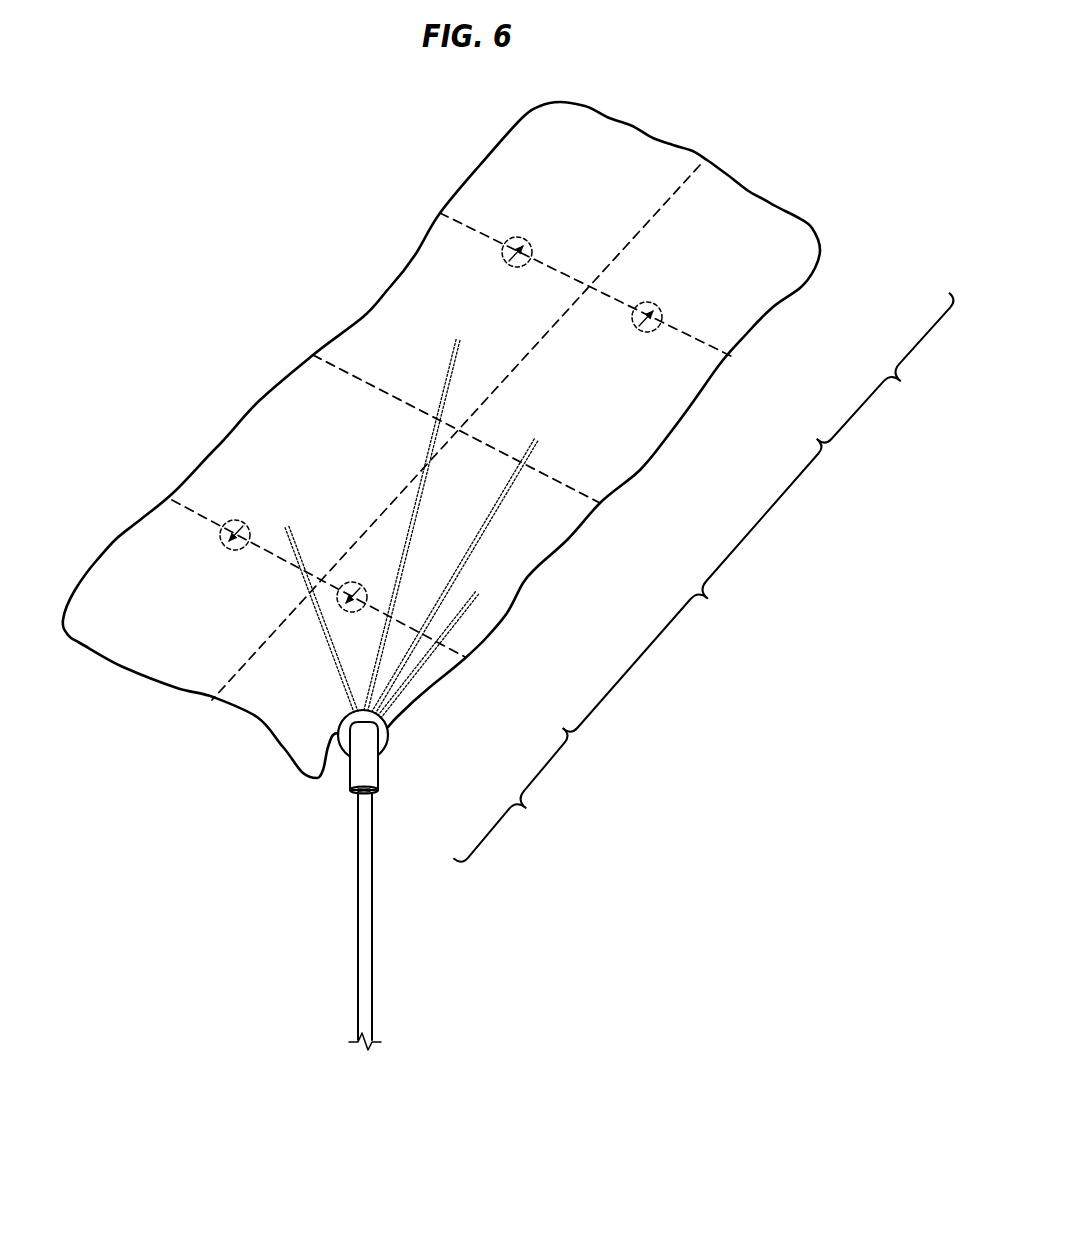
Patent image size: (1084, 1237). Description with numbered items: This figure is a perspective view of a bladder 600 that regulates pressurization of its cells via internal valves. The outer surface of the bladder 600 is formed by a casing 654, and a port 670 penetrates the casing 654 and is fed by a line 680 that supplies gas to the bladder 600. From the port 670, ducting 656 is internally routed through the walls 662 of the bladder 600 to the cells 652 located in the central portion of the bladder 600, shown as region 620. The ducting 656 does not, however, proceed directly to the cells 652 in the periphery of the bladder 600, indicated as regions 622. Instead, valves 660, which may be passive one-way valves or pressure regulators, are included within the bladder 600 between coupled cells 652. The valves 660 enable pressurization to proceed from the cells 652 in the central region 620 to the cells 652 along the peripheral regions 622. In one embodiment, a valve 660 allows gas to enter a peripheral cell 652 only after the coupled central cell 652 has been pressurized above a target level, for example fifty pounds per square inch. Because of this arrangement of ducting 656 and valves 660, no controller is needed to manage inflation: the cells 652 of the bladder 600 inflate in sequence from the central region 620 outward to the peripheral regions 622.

The bladder 600 is at (131, 779).
The region 620 is at (698, 591).
The regions 622 is at (710, 583).
The cells 652 is at (122, 577).
The casing 654 is at (729, 199).
The ducting 656 is at (462, 356).
The valves 660 is at (531, 247).
The walls 662 is at (373, 388).
The port 670 is at (350, 773).
The line 680 is at (358, 927).